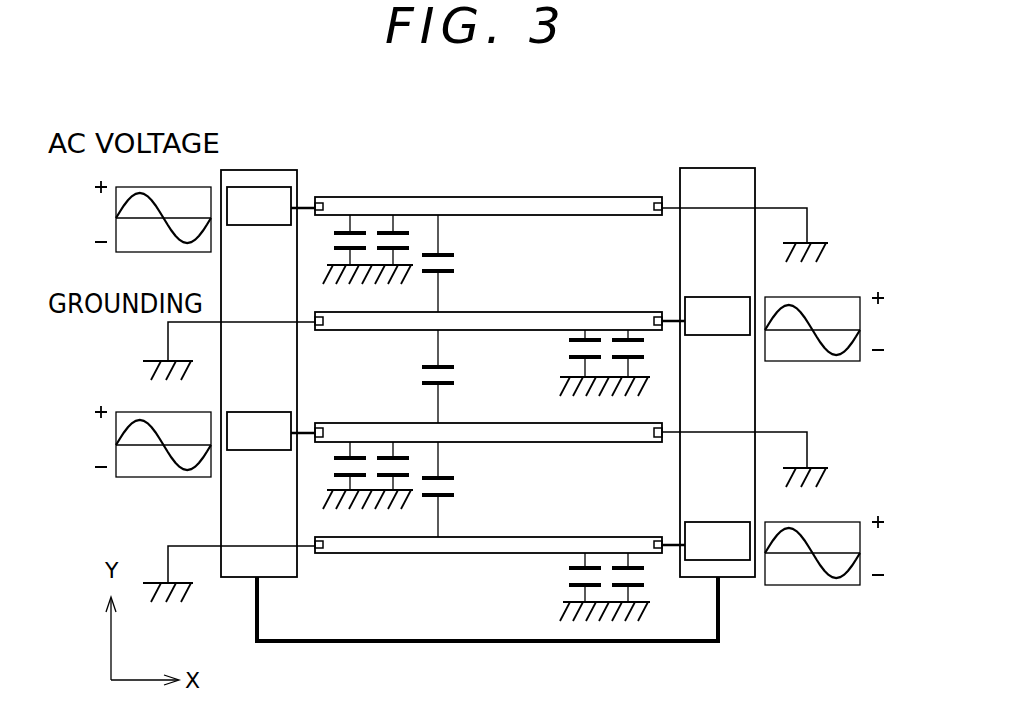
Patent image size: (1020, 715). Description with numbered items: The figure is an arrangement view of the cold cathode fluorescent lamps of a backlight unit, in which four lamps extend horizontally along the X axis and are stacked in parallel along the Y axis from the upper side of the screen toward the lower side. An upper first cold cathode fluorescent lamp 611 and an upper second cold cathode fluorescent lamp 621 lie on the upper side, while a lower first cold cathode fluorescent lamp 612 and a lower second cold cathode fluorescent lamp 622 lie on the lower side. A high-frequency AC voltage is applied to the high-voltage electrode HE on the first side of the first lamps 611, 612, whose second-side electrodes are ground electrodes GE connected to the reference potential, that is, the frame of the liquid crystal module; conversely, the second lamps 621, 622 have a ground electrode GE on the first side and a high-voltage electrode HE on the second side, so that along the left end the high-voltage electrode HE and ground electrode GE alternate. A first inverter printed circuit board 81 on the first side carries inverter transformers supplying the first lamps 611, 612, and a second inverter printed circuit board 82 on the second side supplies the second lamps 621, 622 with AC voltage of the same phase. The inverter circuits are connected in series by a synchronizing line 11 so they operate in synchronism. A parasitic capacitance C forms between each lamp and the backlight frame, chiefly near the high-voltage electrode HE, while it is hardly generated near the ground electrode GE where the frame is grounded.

The synchronizing line 11 is at (550, 643).
The first inverter printed circuit board 81 is at (232, 578).
The second inverter printed circuit board 82 is at (735, 578).
The upper first cold cathode fluorescent lamp 611 is at (554, 197).
The upper second cold cathode fluorescent lamp 621 is at (552, 312).
The lower first cold cathode fluorescent lamp 612 is at (518, 423).
The lower second cold cathode fluorescent lamp 622 is at (527, 537).
The high-voltage electrode HE is at (318, 200).
The ground electrode GE is at (657, 200).
The parasitic capacitance C is at (368, 230).